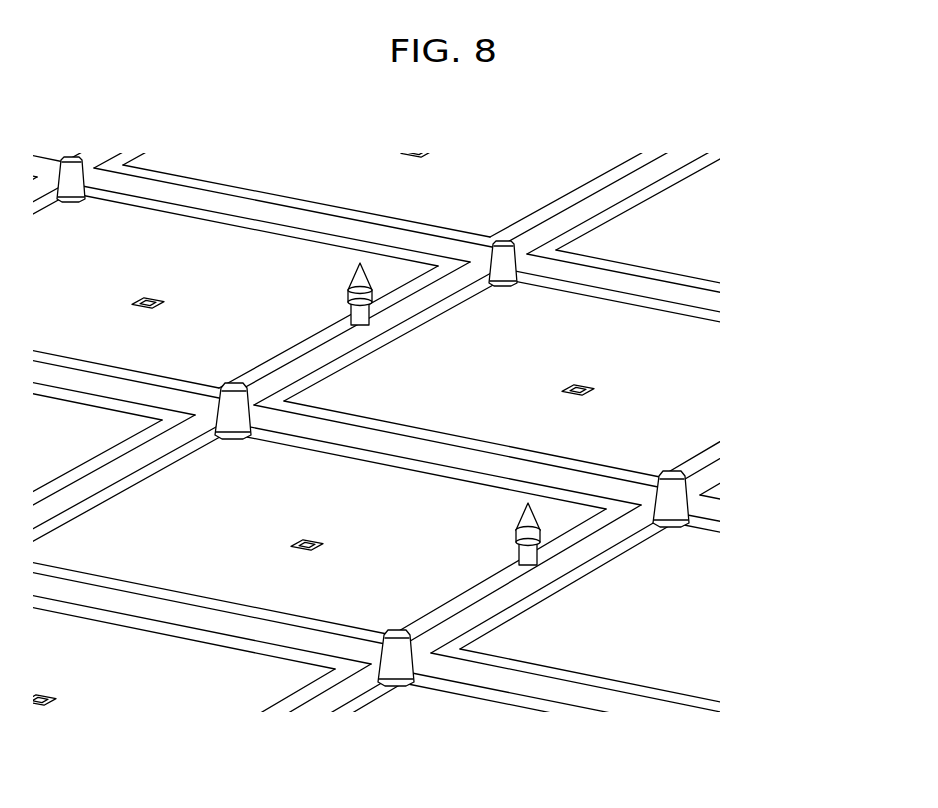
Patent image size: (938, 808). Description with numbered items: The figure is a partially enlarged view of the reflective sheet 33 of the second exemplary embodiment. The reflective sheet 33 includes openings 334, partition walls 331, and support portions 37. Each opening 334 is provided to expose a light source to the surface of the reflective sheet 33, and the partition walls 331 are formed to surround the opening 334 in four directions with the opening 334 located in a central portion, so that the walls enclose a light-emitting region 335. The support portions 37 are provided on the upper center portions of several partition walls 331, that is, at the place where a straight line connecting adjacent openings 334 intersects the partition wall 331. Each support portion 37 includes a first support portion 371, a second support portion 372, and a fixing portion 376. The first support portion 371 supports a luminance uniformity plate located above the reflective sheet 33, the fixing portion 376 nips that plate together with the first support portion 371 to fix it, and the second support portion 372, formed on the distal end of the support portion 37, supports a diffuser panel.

The reflective sheet 33 is at (469, 447).
The partition wall 331 is at (488, 600).
The opening 334 is at (300, 540).
The light-emitting region 335 is at (200, 573).
The support portion 37 is at (685, 582).
The first support portion 371 is at (547, 563).
The second support portion 372 is at (545, 530).
The fixing portion 376 is at (545, 549).